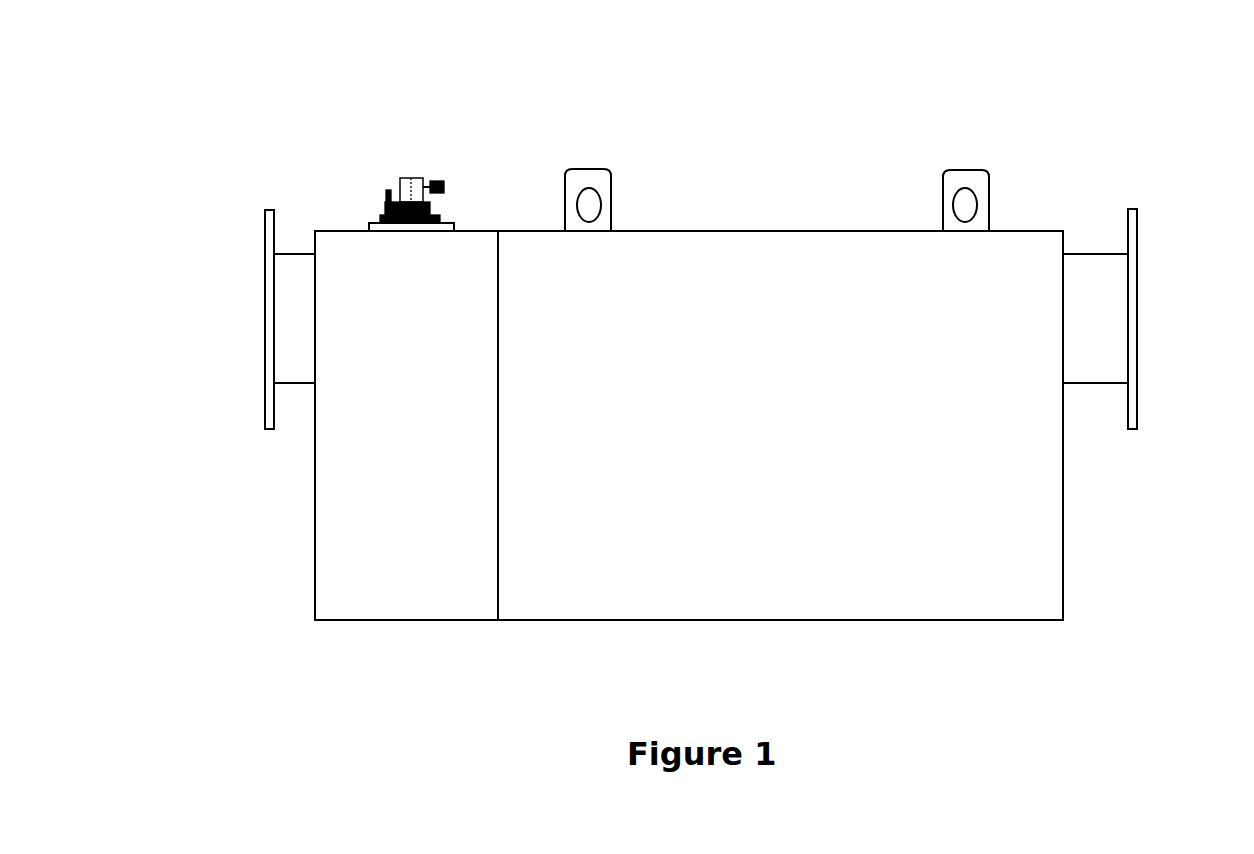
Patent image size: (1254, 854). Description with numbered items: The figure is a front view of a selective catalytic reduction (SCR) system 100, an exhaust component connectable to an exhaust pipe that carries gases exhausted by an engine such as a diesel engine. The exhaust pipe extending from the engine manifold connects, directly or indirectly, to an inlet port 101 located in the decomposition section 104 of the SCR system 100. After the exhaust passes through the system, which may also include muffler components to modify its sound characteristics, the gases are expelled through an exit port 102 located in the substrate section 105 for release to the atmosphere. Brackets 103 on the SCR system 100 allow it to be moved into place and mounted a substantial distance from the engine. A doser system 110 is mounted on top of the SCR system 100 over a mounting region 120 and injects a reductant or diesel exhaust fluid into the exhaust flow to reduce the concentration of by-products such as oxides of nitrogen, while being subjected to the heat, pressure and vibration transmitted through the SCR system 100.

The selective catalytic reduction (SCR) system 100 is at (313, 588).
The inlet port 101 is at (293, 325).
The exit port 102 is at (1110, 347).
The brackets 103 is at (611, 180).
The decomposition section 104 is at (453, 599).
The substrate section 105 is at (837, 572).
The doser system 110 is at (423, 177).
The mounting pad 120 is at (455, 225).